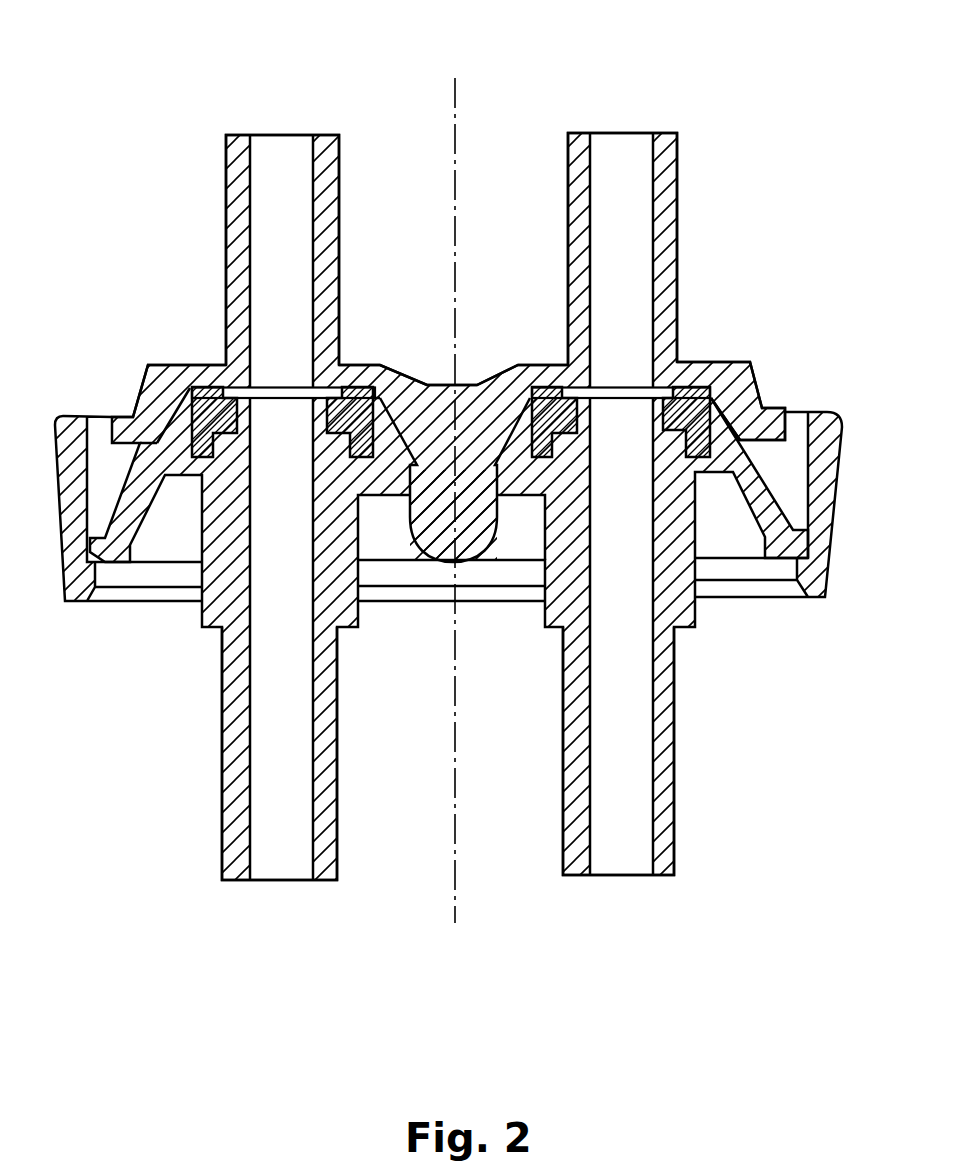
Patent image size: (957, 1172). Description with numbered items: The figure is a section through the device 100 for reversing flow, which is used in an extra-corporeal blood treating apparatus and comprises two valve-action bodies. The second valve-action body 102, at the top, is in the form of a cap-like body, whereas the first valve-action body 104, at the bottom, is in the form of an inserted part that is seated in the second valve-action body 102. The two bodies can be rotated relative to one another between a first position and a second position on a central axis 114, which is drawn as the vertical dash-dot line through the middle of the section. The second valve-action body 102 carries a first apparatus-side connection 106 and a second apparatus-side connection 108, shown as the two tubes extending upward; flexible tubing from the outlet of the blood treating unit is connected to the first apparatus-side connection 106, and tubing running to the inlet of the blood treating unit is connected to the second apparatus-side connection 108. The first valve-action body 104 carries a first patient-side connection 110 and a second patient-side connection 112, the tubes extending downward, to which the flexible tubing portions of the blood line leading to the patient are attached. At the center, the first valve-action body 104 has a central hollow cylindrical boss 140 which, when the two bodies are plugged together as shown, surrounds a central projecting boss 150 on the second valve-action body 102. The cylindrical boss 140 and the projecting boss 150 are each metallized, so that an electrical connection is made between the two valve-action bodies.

The device for reversing flow 100 is at (683, 200).
The second valve-action body 102 is at (762, 386).
The first valve-action body 104 is at (146, 516).
The first apparatus-side connection 106 is at (239, 134).
The second apparatus-side connection 108 is at (667, 132).
The first patient-side connection 110 is at (237, 882).
The second patient-side connection 112 is at (657, 877).
The central axis 114 is at (456, 104).
The central hollow cylindrical boss 140 is at (518, 442).
The central projecting boss 150 is at (470, 416).